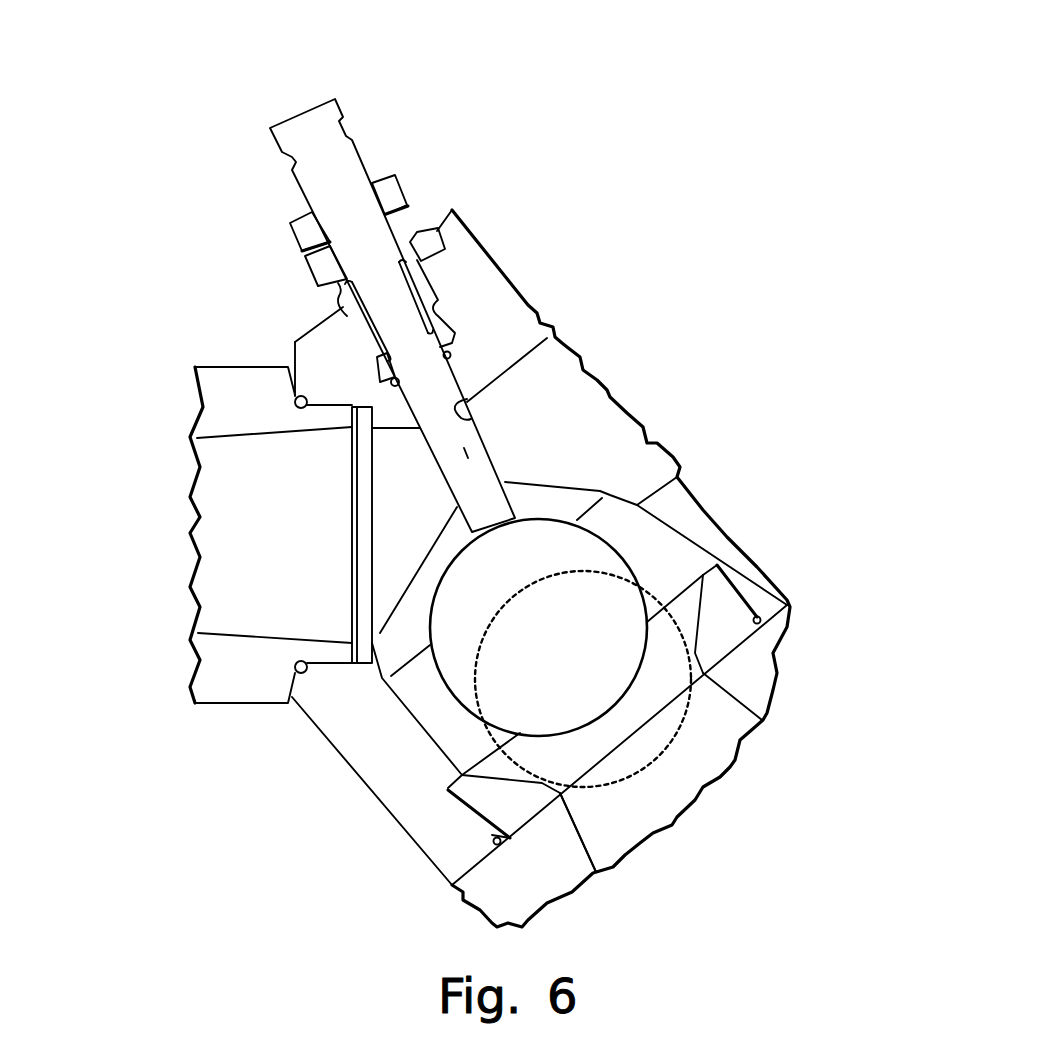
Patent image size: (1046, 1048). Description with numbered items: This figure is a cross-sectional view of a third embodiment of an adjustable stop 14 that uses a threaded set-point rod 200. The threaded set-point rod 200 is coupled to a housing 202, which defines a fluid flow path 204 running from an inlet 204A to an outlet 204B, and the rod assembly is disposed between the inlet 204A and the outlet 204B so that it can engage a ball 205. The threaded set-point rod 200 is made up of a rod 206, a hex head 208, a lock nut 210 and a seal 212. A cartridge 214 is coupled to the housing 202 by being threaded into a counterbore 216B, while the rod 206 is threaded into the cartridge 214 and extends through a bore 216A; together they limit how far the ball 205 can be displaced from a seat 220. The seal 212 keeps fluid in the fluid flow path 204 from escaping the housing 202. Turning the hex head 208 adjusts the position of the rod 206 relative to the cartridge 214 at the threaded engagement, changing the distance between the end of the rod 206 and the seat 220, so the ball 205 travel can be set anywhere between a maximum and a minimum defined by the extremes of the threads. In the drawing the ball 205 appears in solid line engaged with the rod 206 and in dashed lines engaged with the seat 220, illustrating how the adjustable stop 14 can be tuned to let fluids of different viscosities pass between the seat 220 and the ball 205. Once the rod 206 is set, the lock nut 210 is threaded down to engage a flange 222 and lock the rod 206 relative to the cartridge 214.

The adjustable stop 14 is at (259, 98).
The threaded set-point rod 200 is at (272, 173).
The housing 202 is at (622, 463).
The fluid flow path 204 is at (219, 522).
The inlet 204A is at (707, 757).
The outlet 204B is at (196, 534).
The ball 205 is at (560, 653).
The rod 206 is at (464, 448).
The hex head 208 is at (332, 118).
The lock nut 210 is at (390, 182).
The seal 212 is at (458, 343).
The cartridge 214 is at (350, 312).
The bore 216A is at (470, 410).
The counterbore 216B is at (436, 298).
The seat 220 is at (724, 616).
The flange 222 is at (410, 228).